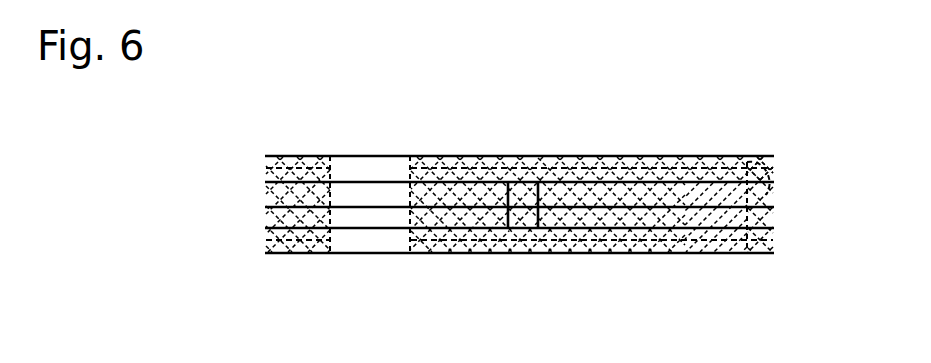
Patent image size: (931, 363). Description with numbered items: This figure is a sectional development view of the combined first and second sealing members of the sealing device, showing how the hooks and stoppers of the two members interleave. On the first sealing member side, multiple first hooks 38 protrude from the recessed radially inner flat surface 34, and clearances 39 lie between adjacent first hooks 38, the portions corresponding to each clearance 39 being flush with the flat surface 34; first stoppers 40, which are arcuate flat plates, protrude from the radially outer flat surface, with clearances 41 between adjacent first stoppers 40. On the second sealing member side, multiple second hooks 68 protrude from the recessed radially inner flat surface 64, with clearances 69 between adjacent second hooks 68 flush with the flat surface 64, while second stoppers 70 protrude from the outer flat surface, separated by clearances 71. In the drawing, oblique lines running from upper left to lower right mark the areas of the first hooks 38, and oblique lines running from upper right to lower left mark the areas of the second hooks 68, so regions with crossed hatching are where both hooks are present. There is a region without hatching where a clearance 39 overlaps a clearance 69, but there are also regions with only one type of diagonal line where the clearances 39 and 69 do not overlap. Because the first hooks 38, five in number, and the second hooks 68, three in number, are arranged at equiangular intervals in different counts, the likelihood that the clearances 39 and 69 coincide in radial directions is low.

The flat surface 34 is at (595, 156).
The first hook 38 is at (332, 256).
The clearance 39 is at (372, 256).
The first stopper 40 is at (453, 156).
The clearance 41 is at (514, 156).
The flat surface 64 is at (585, 255).
The second hook 68 is at (322, 156).
The clearance 69 is at (380, 160).
The second stopper 70 is at (470, 255).
The clearance 71 is at (540, 253).